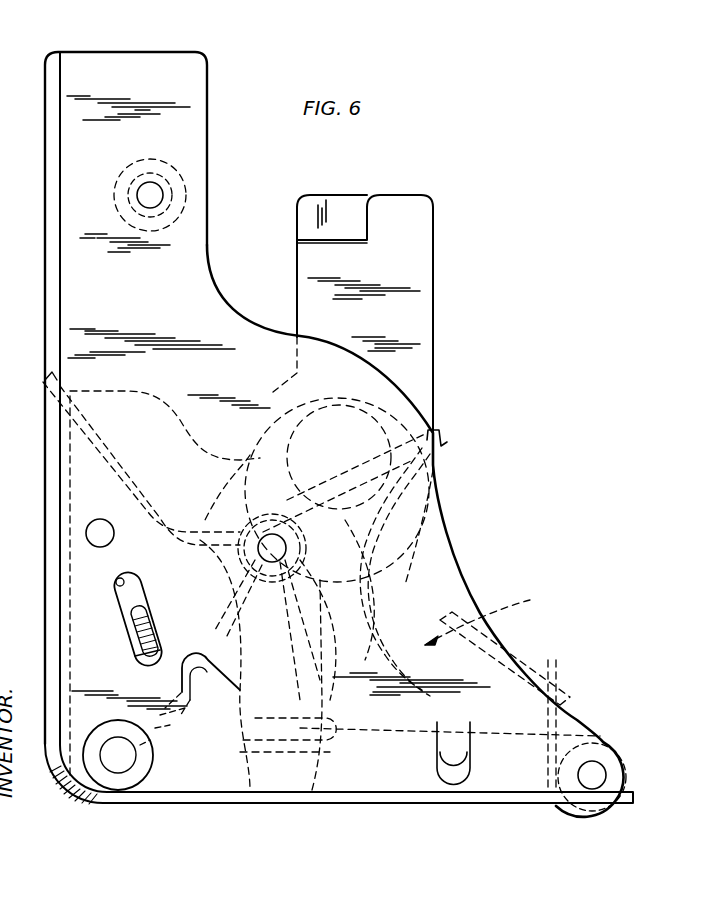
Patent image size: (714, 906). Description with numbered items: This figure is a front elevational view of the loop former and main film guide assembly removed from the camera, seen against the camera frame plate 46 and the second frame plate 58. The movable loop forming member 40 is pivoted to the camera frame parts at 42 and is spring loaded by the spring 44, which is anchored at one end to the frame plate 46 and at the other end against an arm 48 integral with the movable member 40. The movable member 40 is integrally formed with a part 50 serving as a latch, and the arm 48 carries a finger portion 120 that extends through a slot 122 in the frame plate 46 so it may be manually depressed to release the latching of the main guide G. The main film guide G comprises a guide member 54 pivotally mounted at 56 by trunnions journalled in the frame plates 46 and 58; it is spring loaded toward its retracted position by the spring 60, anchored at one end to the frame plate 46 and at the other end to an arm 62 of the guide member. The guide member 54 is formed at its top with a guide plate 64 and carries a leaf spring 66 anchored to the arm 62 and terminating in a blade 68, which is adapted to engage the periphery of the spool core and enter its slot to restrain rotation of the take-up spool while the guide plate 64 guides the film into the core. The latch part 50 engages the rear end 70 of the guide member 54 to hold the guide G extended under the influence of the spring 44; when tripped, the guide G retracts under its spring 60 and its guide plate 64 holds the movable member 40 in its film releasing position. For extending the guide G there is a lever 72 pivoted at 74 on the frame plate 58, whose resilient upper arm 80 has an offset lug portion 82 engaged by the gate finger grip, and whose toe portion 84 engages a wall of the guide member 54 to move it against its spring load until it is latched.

The camera frame plate 46 is at (70, 315).
The frame plate 58 is at (75, 418).
The lever pivot 74 is at (343, 400).
The latch part 50 is at (366, 468).
The leaf spring blade 68 is at (367, 507).
The movable loop forming member 40 is at (202, 520).
The pivot of movable loop forming member 42 is at (272, 548).
The guide plate 64 is at (348, 528).
The slot 122 is at (116, 582).
The arm 48 is at (128, 607).
The finger portion 120 is at (138, 633).
The spring 44 is at (130, 660).
The main film guide G is at (485, 615).
The leaf spring 66 is at (382, 648).
The arm of guide member 62 is at (535, 682).
The spring 60 is at (582, 724).
The pivot mounting 56 is at (594, 775).
The rear end of guide member 70 is at (252, 703).
The guide member 54 is at (332, 740).
The toe portion 84 is at (306, 757).
The upper arm of lever 80 is at (436, 256).
The offset lug portion 82 is at (370, 182).
The lever 72 is at (428, 357).